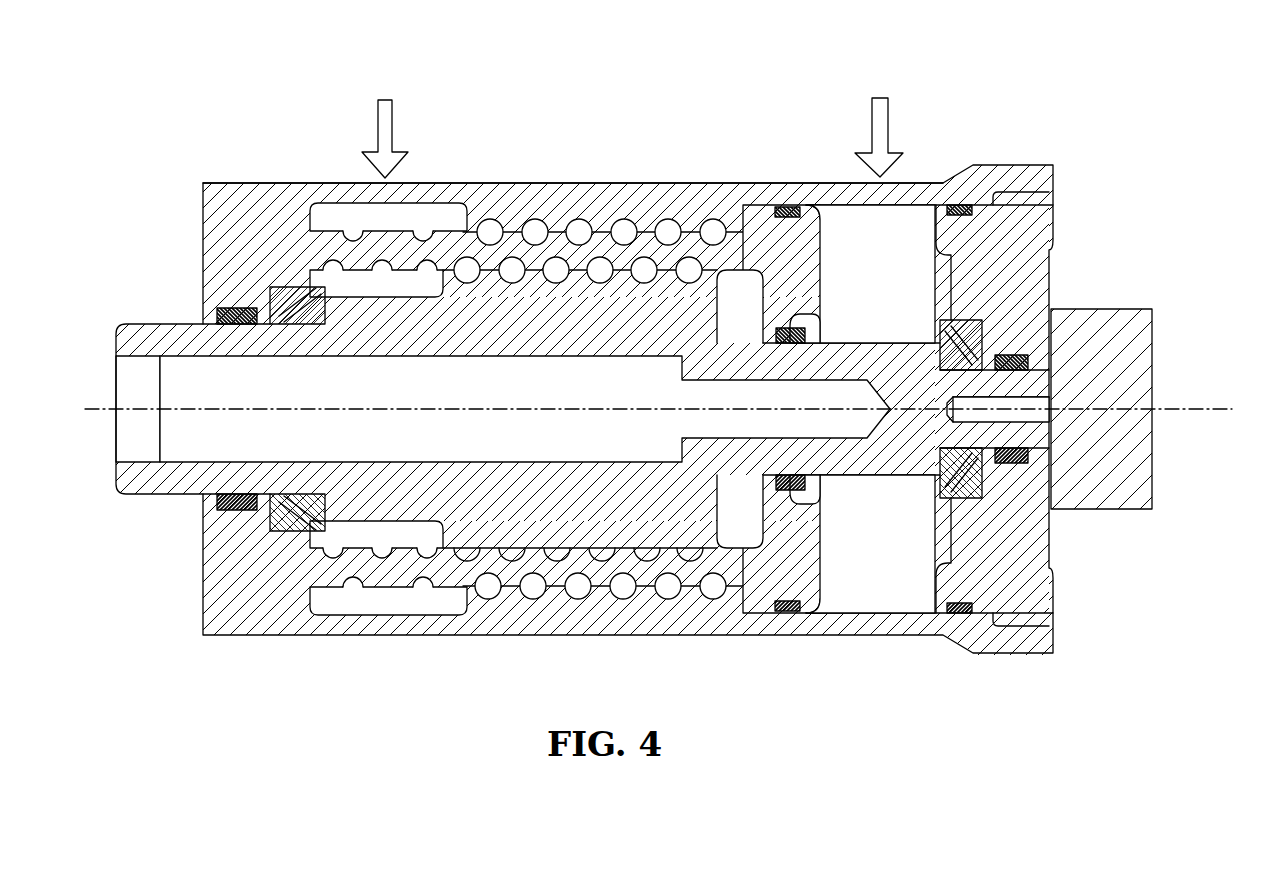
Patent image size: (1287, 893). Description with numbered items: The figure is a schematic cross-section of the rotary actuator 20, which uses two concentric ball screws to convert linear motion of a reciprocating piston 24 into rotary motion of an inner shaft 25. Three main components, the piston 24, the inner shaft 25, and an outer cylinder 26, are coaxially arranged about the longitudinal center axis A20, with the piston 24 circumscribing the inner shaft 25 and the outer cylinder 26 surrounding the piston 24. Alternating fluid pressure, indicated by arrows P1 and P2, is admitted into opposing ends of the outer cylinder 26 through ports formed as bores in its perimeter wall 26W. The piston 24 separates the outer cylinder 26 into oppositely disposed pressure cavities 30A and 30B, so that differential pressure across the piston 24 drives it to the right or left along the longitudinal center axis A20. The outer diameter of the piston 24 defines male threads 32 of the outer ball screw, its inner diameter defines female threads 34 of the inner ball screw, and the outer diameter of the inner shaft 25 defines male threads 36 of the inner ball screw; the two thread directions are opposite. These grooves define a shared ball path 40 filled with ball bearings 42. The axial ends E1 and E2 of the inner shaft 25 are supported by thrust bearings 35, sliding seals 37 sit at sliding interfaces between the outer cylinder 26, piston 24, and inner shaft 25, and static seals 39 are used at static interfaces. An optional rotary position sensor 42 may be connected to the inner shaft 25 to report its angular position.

The rotary actuator 20 is at (1010, 90).
The piston 24 is at (800, 250).
The inner shaft 25 is at (134, 323).
The outer cylinder 26 is at (262, 187).
The perimeter wall 26W is at (492, 183).
The pressure cavity 30A is at (901, 272).
The pressure cavity 30B is at (401, 230).
The male threads 32 is at (602, 237).
The female threads 34 is at (360, 570).
The thrust bearings 35 is at (283, 288).
The male threads 36 is at (670, 280).
The sliding seals 37 is at (790, 205).
The static seals 39 is at (1012, 355).
The ball path 40 is at (423, 545).
The ball bearings 42 is at (1116, 382).
The fluid pressure arrow P1 is at (888, 125).
The fluid pressure arrow P2 is at (378, 127).
The axial end E1 is at (96, 408).
The axial end E2 is at (870, 544).
The longitudinal center axis A20 is at (1187, 408).